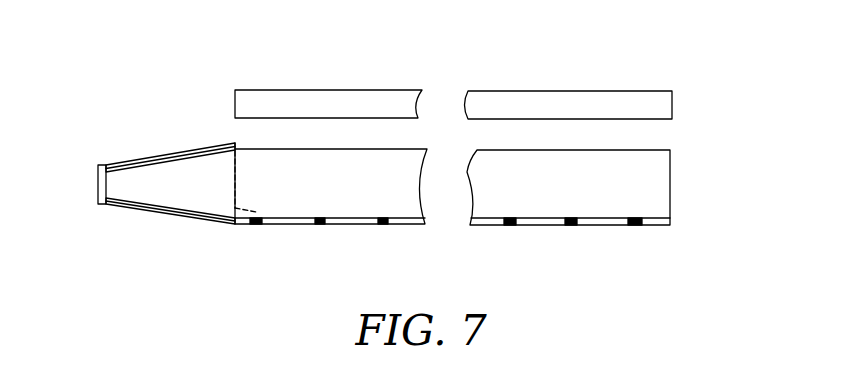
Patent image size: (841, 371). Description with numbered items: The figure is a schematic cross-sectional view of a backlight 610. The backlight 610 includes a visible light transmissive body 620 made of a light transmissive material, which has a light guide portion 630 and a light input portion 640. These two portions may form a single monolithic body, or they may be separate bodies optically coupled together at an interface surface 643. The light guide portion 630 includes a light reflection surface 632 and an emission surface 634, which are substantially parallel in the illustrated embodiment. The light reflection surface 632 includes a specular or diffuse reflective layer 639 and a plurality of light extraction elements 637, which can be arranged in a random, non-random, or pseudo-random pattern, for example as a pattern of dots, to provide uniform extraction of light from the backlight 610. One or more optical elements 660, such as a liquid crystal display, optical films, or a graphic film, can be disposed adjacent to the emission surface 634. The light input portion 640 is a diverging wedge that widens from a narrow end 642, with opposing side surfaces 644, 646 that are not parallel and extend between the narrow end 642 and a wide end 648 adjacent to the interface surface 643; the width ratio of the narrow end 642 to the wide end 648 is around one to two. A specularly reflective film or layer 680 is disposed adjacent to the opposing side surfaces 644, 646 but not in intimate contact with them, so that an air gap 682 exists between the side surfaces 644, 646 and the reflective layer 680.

The backlight 610 is at (352, 60).
The visible light transmissive body 620 is at (692, 121).
The light guide portion 630 is at (688, 178).
The light reflection surface 632 is at (593, 218).
The emission surface 634 is at (537, 150).
The light extraction elements 637 is at (320, 224).
The reflective layer 639 is at (543, 219).
The light input portion 640 is at (158, 143).
The narrow end 642 is at (98, 188).
The interface surface 643 is at (270, 226).
The side surface 644 is at (197, 207).
The side surface 646 is at (127, 166).
The wide end 648 is at (234, 162).
The optical element 660 is at (292, 90).
The specularly reflective film or layer 680 is at (118, 208).
The air gap 682 is at (155, 205).